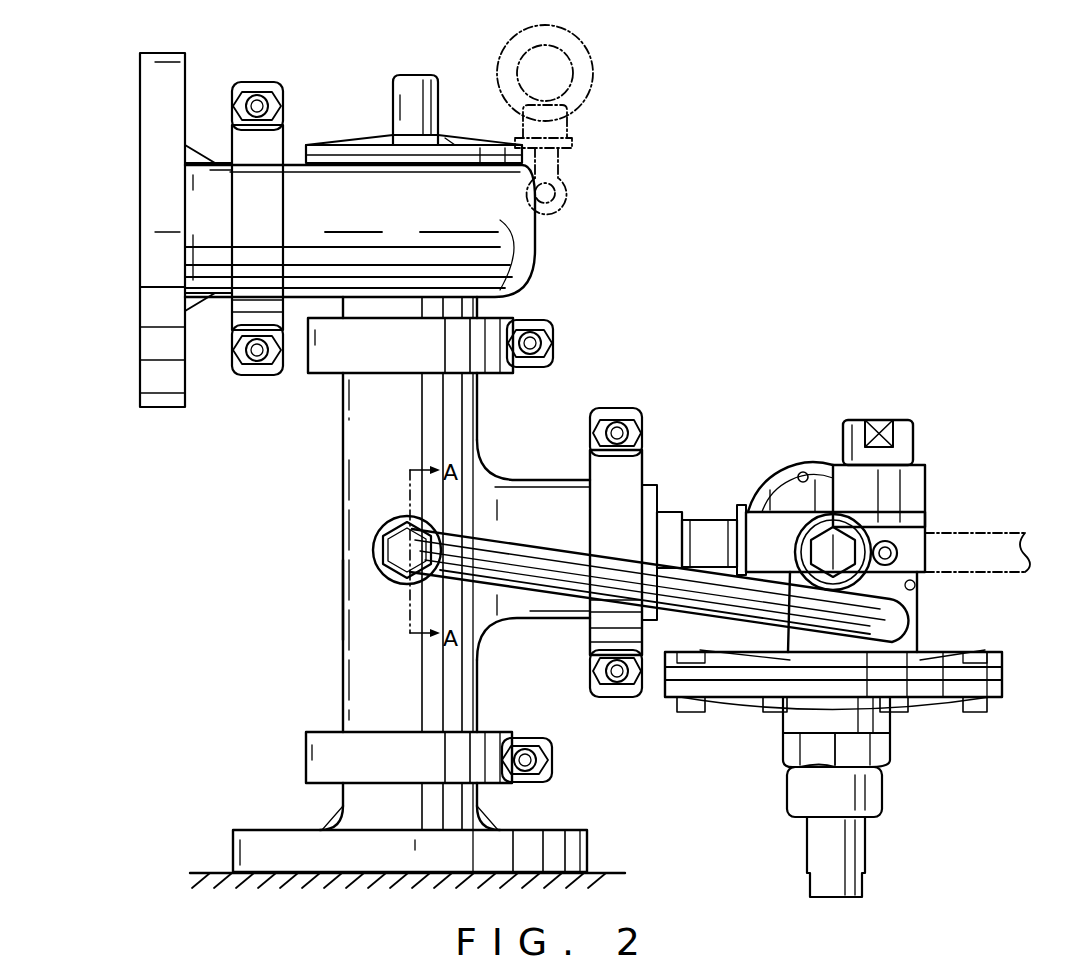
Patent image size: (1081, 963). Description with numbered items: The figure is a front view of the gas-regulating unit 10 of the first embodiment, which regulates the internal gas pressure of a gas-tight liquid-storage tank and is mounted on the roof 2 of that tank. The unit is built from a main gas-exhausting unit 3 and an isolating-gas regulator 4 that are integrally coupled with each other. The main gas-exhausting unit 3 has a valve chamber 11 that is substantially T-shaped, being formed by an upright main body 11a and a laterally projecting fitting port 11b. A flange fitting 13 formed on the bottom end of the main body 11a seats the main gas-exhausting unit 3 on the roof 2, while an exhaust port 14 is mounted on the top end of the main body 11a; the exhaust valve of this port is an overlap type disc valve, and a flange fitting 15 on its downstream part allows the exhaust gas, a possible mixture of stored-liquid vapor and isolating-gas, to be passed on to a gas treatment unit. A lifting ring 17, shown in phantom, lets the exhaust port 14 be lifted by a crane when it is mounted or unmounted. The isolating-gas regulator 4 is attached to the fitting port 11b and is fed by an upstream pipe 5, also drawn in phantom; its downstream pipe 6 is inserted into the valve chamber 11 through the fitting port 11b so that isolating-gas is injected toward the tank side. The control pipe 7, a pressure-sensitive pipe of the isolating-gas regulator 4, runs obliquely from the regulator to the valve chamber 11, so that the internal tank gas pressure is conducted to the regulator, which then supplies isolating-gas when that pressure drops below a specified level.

The roof 2 is at (600, 873).
The main gas-exhausting unit 3 is at (412, 563).
The isolating-gas regulator 4 is at (938, 460).
The upstream pipe 5 is at (965, 535).
The downstream pipe 6 is at (688, 518).
The control pipe 7 is at (600, 565).
The gas-regulating unit 10 is at (606, 390).
The valve chamber 11 is at (372, 486).
The main body 11a is at (343, 618).
The fitting port 11b is at (542, 620).
The flange fitting 13 is at (245, 828).
The exhaust port 14 is at (498, 262).
The flange fitting 15 is at (155, 200).
The lifting ring 17 is at (590, 102).